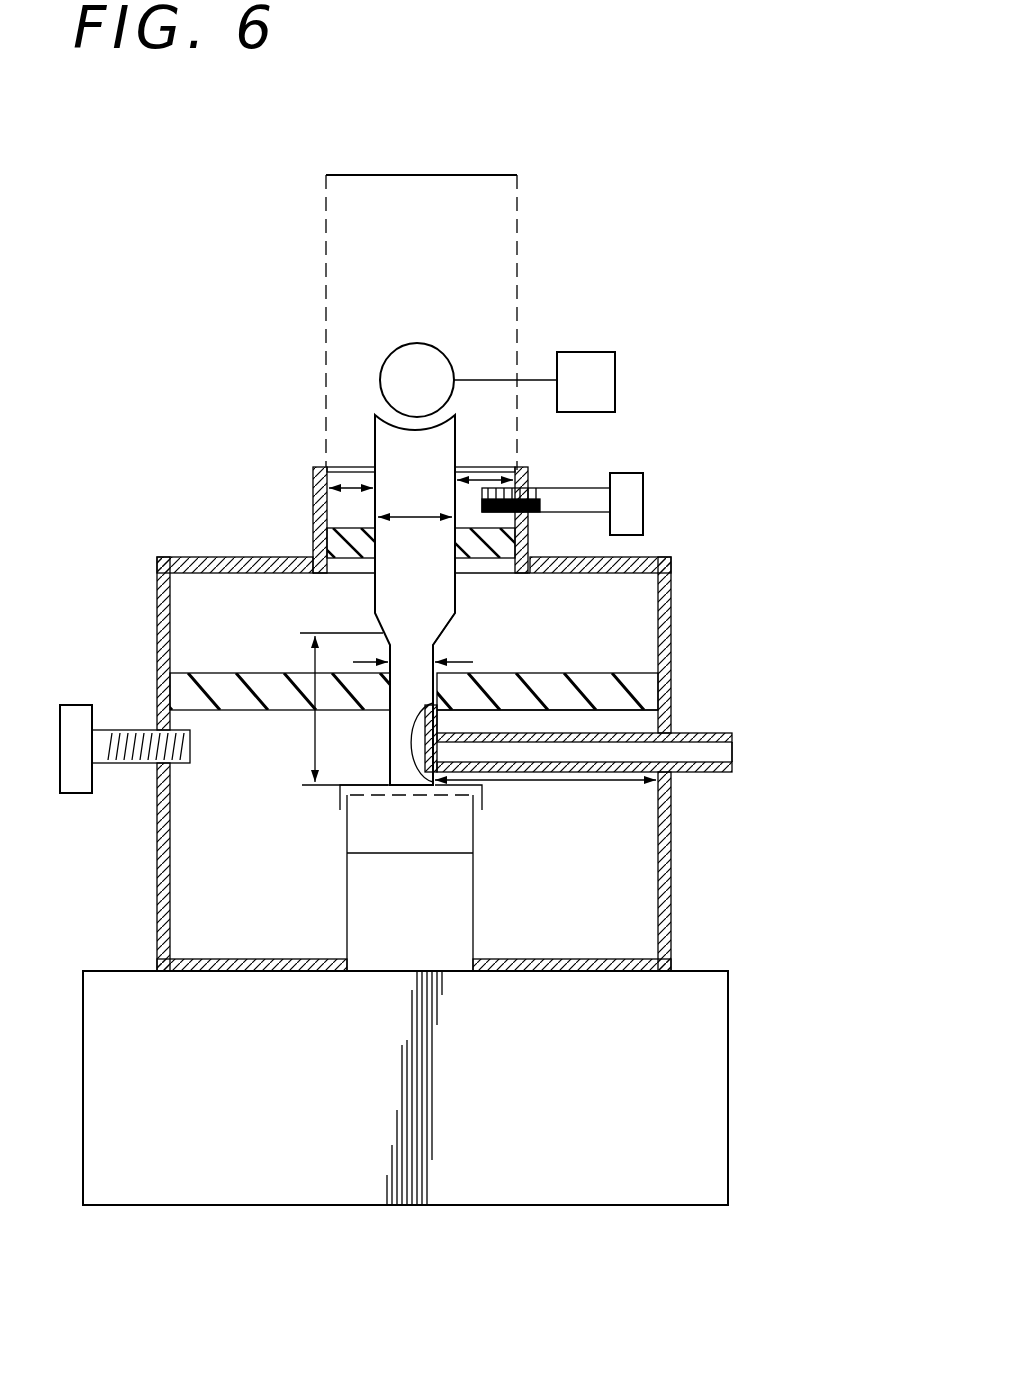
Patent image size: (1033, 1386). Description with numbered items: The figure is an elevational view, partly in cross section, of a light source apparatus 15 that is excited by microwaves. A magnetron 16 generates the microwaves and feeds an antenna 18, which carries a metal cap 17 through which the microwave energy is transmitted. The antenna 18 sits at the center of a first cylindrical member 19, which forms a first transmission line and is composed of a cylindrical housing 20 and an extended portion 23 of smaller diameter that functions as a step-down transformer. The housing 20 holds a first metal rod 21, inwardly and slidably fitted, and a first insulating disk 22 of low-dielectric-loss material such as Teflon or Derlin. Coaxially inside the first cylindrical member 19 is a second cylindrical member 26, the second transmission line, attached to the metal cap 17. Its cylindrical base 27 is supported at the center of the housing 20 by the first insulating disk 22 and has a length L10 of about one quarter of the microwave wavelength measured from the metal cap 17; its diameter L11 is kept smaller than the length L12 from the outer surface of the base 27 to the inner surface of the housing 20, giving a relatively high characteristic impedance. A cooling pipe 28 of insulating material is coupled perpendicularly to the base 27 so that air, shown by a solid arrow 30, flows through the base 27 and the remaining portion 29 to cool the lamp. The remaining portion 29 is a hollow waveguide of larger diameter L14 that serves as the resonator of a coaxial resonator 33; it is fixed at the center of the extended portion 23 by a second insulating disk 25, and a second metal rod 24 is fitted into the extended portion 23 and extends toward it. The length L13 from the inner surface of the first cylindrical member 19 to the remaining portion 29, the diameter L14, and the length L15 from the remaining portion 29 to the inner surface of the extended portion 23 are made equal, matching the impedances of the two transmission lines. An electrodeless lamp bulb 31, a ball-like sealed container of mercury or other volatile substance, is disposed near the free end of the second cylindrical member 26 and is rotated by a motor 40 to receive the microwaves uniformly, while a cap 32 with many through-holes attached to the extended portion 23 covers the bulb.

The light source apparatus 15 is at (543, 175).
The magnetron 16 is at (718, 1002).
The metal cap 17 is at (360, 830).
The antenna 18 is at (453, 932).
The first cylindrical member 19 is at (784, 540).
The cylindrical housing 20 is at (668, 905).
The first metal rod 21 is at (80, 705).
The first insulating disk 22 is at (605, 688).
The extended portion 23 is at (530, 548).
The second metal rod 24 is at (640, 495).
The second insulating disk 25 is at (345, 542).
The second cylindrical member 26 is at (468, 586).
The base 27 is at (400, 720).
The cooling pipe 28 is at (700, 732).
The remaining portion 29 is at (385, 452).
The solid arrow 30 is at (757, 752).
The electrodeless lamp bulb 31 is at (403, 360).
The cap 32 is at (517, 242).
The coaxial resonator 33 is at (582, 460).
The motor 40 is at (590, 352).
The length of the base L10 is at (315, 735).
The diameter of the base L11 is at (425, 655).
The length from base to housing L12 is at (565, 782).
The length from first cylindrical member to remaining portion L13 is at (348, 488).
The diameter of the remaining portion L14 is at (420, 522).
The length from remaining portion to extended portion L15 is at (490, 478).